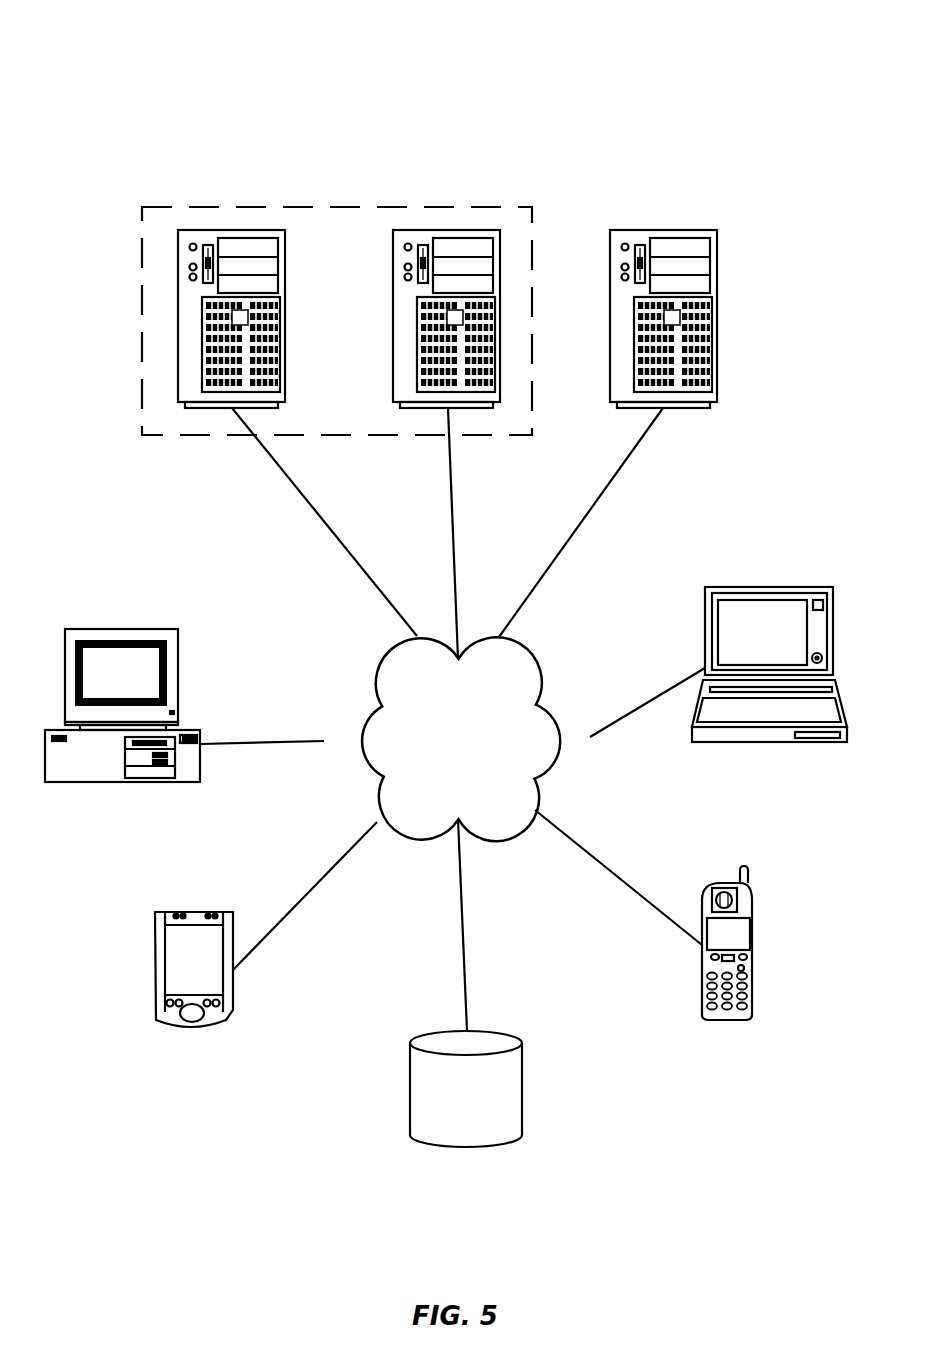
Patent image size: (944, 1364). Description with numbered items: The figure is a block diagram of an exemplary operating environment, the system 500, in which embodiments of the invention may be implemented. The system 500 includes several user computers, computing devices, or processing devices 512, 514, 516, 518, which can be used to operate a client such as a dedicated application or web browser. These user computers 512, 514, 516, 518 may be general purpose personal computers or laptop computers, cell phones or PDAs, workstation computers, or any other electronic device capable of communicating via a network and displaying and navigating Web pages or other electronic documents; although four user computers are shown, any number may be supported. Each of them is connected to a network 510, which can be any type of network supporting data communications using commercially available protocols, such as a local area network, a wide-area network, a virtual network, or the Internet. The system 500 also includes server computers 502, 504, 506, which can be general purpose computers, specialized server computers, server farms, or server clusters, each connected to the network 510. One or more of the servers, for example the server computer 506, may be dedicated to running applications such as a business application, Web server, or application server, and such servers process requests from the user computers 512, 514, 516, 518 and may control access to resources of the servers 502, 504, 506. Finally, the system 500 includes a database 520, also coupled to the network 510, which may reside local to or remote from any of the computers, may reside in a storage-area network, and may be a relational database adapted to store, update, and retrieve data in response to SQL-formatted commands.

The system 500 is at (822, 113).
The server computer 502 is at (215, 230).
The server computer 504 is at (447, 230).
The server computer 506 is at (717, 316).
The network 510 is at (438, 784).
The user computer 512 is at (120, 629).
The user computer 514 is at (767, 587).
The user computer 516 is at (722, 1022).
The user computer 518 is at (193, 1030).
The database 520 is at (447, 1131).